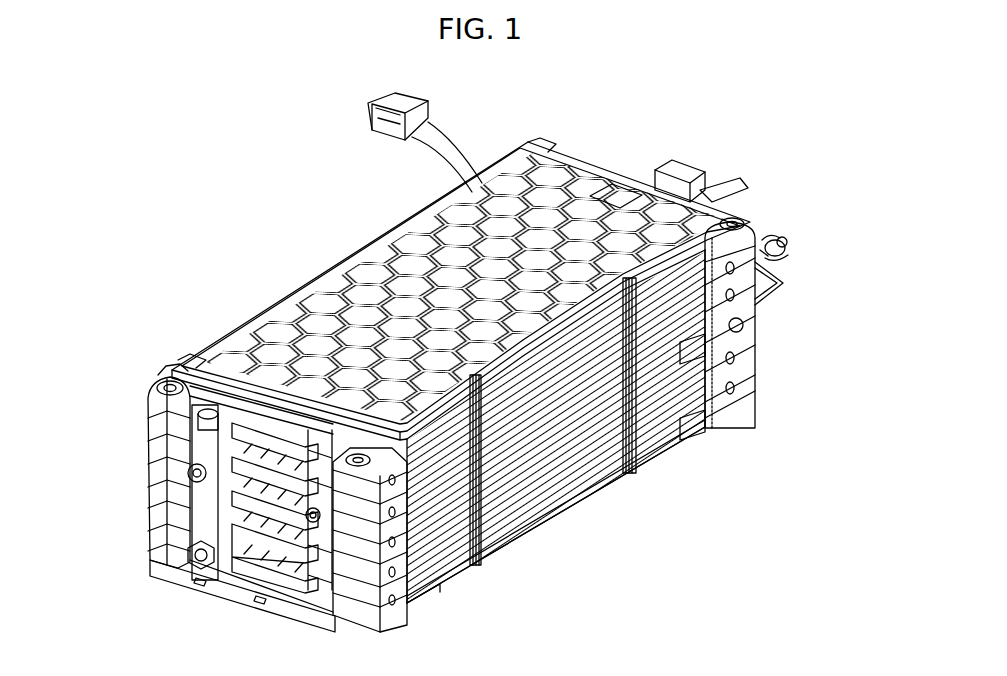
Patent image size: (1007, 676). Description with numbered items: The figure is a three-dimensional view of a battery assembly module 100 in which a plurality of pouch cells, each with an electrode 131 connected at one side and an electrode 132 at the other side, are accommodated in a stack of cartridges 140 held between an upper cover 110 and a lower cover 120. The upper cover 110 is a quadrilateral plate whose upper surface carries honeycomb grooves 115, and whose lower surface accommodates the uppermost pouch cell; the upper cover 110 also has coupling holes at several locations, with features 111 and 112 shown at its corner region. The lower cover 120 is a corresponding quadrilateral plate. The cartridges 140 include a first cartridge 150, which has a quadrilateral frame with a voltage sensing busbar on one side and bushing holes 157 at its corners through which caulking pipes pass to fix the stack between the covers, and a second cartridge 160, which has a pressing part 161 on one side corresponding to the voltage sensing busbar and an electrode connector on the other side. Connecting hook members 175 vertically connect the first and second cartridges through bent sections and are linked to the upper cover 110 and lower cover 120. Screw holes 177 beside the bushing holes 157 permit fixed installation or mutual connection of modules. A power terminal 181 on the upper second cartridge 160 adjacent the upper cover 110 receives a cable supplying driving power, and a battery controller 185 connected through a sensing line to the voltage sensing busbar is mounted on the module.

The battery assembly module 100 is at (228, 134).
The upper cover 110 is at (418, 193).
The cover corner cap 111 is at (157, 372).
The cover corner tab 112 is at (188, 361).
The honeycomb reinforcing pattern 115 is at (385, 273).
The lower cover 120 is at (575, 523).
The electrode 131 is at (250, 592).
The electrode 132 is at (270, 415).
The cartridge 140 is at (785, 493).
The first cartridge 150 is at (697, 410).
The bushing hole 157 is at (757, 386).
The second cartridge 160 is at (643, 422).
The pressing part 161 is at (146, 526).
The connecting hook member 175 is at (488, 558).
The screw hole 177 is at (430, 592).
The power terminal 181 is at (150, 392).
The battery controller 185 is at (683, 165).